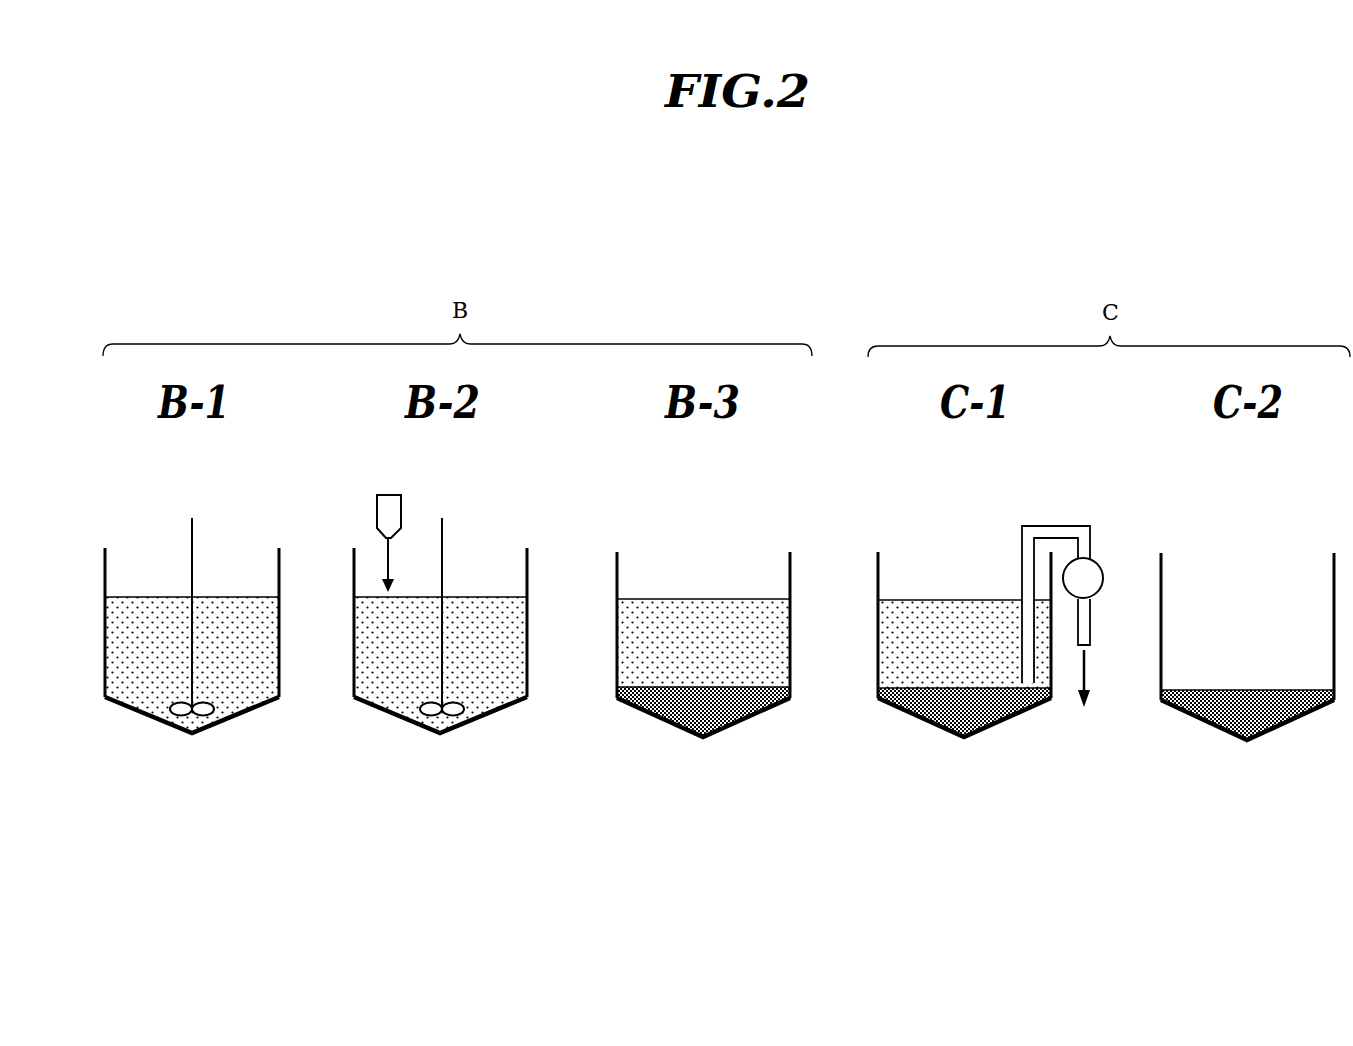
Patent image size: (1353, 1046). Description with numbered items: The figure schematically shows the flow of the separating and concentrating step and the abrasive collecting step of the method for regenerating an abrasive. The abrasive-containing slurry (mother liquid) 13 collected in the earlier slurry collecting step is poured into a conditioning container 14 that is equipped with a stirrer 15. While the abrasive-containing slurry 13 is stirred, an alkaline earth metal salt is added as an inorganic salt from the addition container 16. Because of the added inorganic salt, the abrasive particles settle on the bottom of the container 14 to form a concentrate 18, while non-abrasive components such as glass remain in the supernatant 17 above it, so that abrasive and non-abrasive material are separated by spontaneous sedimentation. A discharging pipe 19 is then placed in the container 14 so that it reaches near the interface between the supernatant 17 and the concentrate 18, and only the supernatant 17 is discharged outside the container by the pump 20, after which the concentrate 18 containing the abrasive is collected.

The suspension 13 is at (153, 677).
The vessel 14 is at (247, 713).
The stirrer 15 is at (193, 532).
The feed funnel 16 is at (402, 495).
The supernatant liquid 17 is at (663, 623).
The sediment 18 is at (673, 713).
The suction pipe 19 is at (1052, 525).
The pump 20 is at (1095, 560).